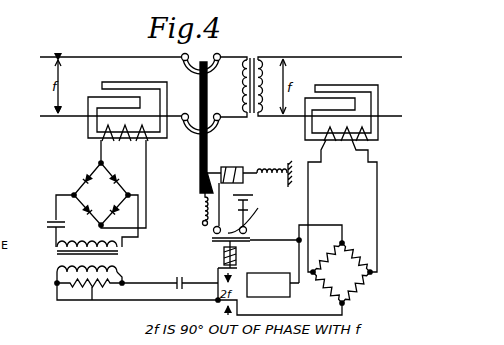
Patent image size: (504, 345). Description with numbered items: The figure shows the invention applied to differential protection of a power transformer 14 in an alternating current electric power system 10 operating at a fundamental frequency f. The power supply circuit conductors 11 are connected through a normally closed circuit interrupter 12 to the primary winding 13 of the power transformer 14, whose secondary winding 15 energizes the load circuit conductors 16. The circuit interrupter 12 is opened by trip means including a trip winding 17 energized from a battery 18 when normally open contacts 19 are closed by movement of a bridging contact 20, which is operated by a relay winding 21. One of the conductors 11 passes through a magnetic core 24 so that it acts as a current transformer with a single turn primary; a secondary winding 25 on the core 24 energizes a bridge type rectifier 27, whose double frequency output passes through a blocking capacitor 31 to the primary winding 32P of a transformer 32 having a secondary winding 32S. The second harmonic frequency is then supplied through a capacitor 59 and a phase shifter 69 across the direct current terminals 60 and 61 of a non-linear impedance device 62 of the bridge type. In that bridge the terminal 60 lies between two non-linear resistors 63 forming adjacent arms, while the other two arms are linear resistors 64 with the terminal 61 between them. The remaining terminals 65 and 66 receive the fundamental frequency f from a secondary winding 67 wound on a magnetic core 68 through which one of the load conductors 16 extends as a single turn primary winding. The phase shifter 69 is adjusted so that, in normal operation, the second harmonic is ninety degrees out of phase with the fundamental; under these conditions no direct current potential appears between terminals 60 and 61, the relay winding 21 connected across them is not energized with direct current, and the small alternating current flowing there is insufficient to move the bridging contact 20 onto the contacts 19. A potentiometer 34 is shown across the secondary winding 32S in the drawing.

The alternating current electric power system 10 is at (113, 50).
The power supply circuit conductors 11 is at (76, 54).
The circuit interrupter 12 is at (222, 124).
The primary winding 13 is at (238, 66).
The power transformer 14 is at (259, 50).
The secondary winding 15 is at (271, 70).
The load circuit conductors 16 is at (385, 56).
The trip winding 17 is at (236, 167).
The battery 18 is at (262, 200).
The normally open contacts 19 is at (260, 222).
The bridging contact 20 is at (252, 240).
The relay winding 21 is at (238, 264).
The magnetic core 24 is at (112, 83).
The secondary winding 25 is at (135, 150).
The bridge type rectifier 27 is at (82, 169).
The blocking capacitor 31 is at (52, 223).
The transformer 32 is at (55, 258).
The primary winding 32P is at (58, 240).
The secondary winding 32S is at (57, 283).
The potentiometer 34 is at (89, 297).
The capacitor 59 is at (180, 277).
The direct current terminal 60 is at (337, 269).
The direct current terminal 61 is at (345, 306).
The non-linear impedance device 62 is at (366, 292).
The non-linear resistors 63 is at (352, 266).
The linear resistors 64 is at (330, 285).
The terminal 65 is at (313, 278).
The terminal 66 is at (372, 273).
The secondary winding 67 is at (342, 206).
The magnetic core 68 is at (376, 141).
The phase shifter 69 is at (287, 273).